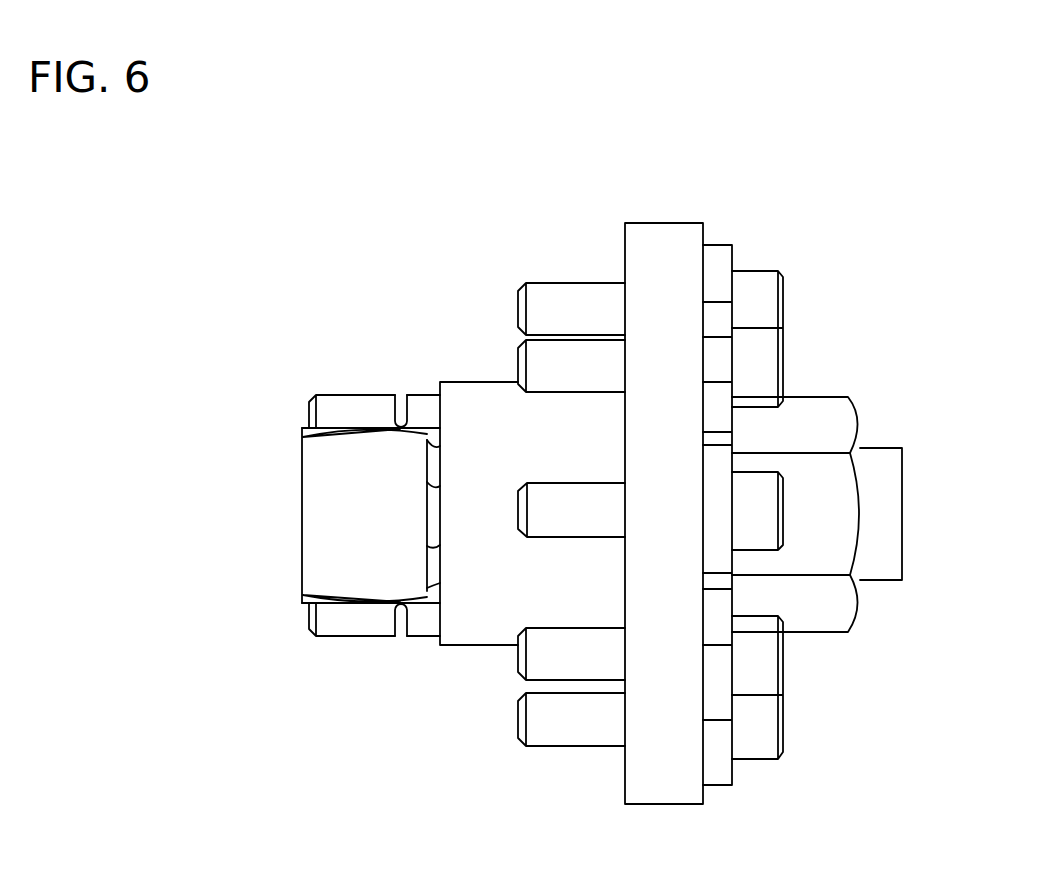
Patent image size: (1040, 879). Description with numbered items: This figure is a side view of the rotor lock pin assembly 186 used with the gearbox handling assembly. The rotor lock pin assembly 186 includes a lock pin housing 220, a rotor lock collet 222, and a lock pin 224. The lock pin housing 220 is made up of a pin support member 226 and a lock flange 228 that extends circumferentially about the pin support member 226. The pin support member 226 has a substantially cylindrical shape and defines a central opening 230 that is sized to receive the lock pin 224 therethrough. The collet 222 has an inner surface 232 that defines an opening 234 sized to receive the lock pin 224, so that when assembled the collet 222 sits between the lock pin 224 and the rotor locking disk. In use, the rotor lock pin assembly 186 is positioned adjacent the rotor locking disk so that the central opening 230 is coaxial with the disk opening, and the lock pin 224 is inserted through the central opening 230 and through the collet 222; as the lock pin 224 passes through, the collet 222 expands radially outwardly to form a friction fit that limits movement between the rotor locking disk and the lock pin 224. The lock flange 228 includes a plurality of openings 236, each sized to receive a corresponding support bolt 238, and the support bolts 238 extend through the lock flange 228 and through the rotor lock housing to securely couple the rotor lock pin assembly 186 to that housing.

The rotor lock pin assembly 186 is at (857, 193).
The lock pin housing 220 is at (717, 165).
The rotor lock collet 222 is at (347, 395).
The lock pin 224 is at (330, 523).
The pin support member 226 is at (480, 382).
The lock flange 228 is at (653, 222).
The central opening 230 is at (413, 387).
The inner surface 232 is at (365, 598).
The opening 234 is at (287, 470).
The openings 236 is at (808, 288).
The support bolts 238 is at (783, 362).